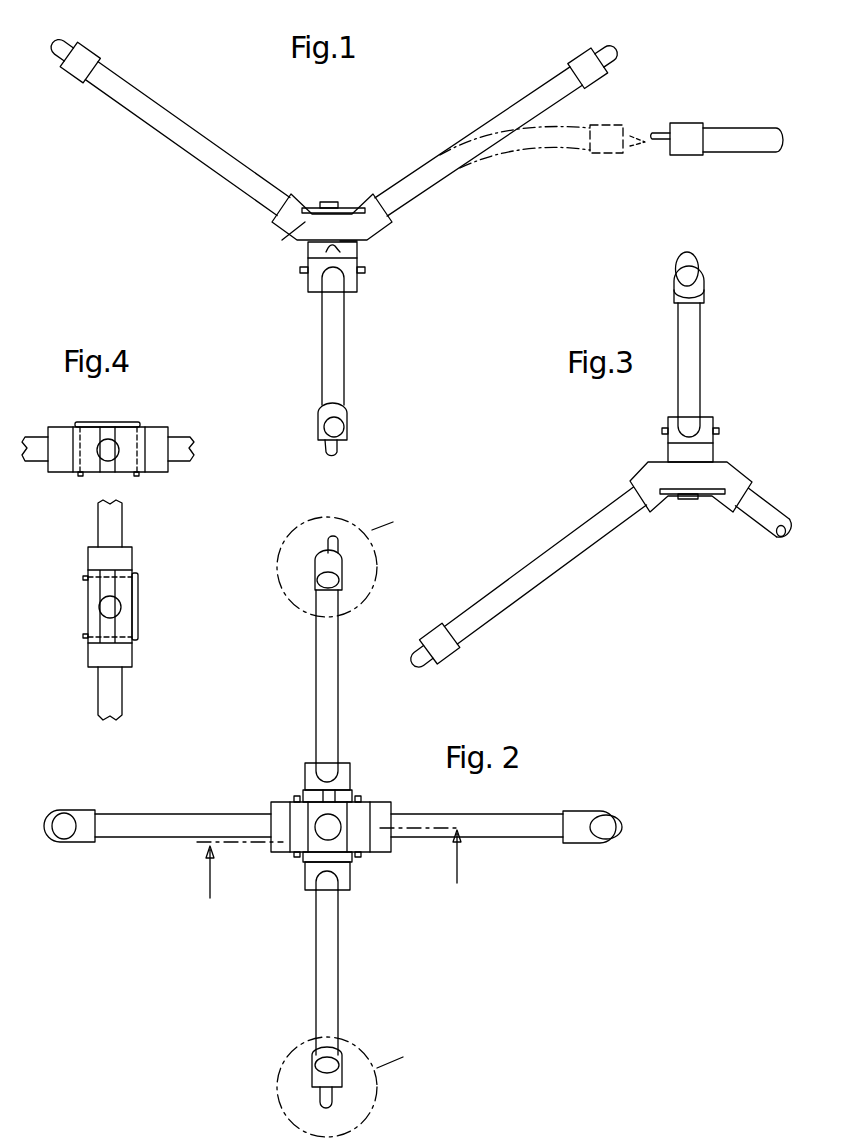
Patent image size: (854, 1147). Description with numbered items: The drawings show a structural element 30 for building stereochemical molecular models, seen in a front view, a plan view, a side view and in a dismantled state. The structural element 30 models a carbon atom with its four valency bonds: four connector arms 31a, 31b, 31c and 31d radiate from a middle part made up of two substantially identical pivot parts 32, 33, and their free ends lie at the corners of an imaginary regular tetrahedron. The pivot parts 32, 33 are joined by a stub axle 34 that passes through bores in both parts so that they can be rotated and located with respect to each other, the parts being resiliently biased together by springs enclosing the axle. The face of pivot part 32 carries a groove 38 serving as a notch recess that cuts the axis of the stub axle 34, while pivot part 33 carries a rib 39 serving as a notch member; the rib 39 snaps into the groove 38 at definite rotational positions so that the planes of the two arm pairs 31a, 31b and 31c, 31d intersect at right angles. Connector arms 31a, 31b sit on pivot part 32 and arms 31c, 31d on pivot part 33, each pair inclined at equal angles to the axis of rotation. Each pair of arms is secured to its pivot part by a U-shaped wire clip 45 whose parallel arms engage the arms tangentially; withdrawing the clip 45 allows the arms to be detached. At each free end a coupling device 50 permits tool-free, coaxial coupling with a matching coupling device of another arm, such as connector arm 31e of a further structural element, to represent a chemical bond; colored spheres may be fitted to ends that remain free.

In FIG. 1, the structural element 30 is at (252, 219).
In FIG. 3, the structural element 30 is at (685, 534).
In FIG. 2, the structural element 30 is at (283, 771).
In FIG. 1, the connector arm 31a is at (497, 125).
In FIG. 4, the connector arm 31a is at (185, 437).
In FIG. 3, the connector arm 31a is at (693, 372).
In FIG. 2, the connector arm 31a is at (517, 830).
In FIG. 1, the connector arm 31b is at (170, 122).
In FIG. 4, the connector arm 31b is at (37, 437).
In FIG. 2, the connector arm 31b is at (153, 828).
In FIG. 1, the connector arm 31c is at (346, 353).
In FIG. 4, the connector arm 31c is at (112, 685).
In FIG. 3, the connector arm 31c is at (557, 555).
In FIG. 2, the connector arm 31c is at (330, 955).
In FIG. 4, the connector arm 31d is at (110, 527).
In FIG. 3, the connector arm 31d is at (770, 525).
In FIG. 2, the connector arm 31d is at (327, 688).
In FIG. 1, the tubular member (extension) 31e is at (741, 138).
In FIG. 1, the pivot part 32 is at (367, 203).
In FIG. 4, the pivot part 32 is at (157, 465).
In FIG. 3, the pivot part 32 is at (712, 415).
In FIG. 2, the pivot part 32 is at (388, 805).
In FIG. 1, the pivot part 33 is at (307, 283).
In FIG. 4, the pivot part 33 is at (102, 557).
In FIG. 3, the pivot part 33 is at (737, 470).
In FIG. 2, the pivot part 33 is at (305, 875).
In FIG. 1, the stub axle 34 is at (320, 204).
In FIG. 2, the stub axle 34 is at (342, 838).
In FIG. 1, the groove 38 is at (355, 241).
In FIG. 4, the groove 38 is at (107, 462).
In FIG. 1, the rib 39 is at (331, 246).
In FIG. 4, the rib 39 is at (107, 627).
In FIG. 1, the wire clip 45 is at (396, 288).
In FIG. 4, the wire clip 45 is at (118, 422).
In FIG. 3, the wire clip 45 is at (670, 487).
In FIG. 2, the wire clip 45 is at (327, 826).
In FIG. 1, the coupling device 50 is at (99, 51).
In FIG. 3, the coupling device 50 is at (689, 277).
In FIG. 2, the coupling device 50 is at (77, 812).